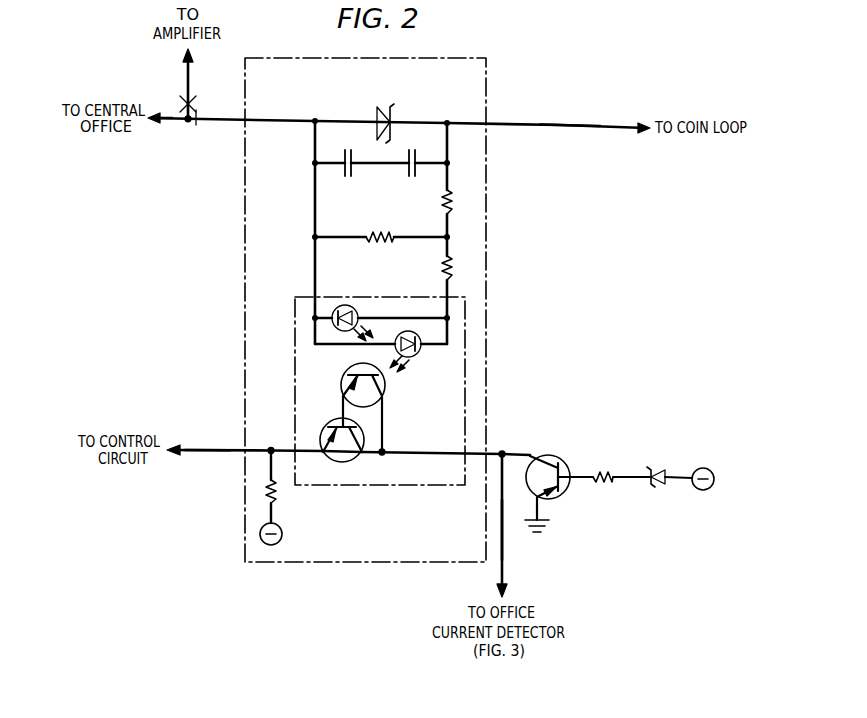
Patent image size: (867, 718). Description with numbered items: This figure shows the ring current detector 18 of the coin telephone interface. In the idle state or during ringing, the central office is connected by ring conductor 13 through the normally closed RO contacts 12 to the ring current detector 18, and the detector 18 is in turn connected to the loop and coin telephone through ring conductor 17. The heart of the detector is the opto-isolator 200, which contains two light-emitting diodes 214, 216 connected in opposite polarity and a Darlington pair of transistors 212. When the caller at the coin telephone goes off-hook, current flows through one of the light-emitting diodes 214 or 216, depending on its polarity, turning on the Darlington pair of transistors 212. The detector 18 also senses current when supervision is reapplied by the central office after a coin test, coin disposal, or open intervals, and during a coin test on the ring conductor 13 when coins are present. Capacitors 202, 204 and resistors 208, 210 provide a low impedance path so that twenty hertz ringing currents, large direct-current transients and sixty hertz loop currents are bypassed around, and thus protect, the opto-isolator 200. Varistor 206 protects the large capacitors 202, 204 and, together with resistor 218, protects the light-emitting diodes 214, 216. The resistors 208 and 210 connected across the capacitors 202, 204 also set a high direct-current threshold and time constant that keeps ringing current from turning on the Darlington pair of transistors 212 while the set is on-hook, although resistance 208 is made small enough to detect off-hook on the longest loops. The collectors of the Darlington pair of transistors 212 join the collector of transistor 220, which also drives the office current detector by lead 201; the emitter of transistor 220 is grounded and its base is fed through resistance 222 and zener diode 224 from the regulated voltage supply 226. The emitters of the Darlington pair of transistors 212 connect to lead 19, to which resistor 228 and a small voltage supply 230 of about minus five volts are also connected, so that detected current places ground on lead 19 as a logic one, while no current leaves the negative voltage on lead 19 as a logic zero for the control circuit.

The RO contacts 12 is at (187, 126).
The ring conductor 13 is at (169, 116).
The RO contacts RO is at (200, 98).
The ring conductor 17 is at (563, 130).
The ring current detector 18 is at (478, 78).
The lead 19 is at (205, 444).
The opto-isolator 200 is at (398, 482).
The lead 201 is at (506, 544).
The capacitor 202 is at (346, 174).
The capacitor 204 is at (413, 154).
The varistor 206 is at (398, 119).
The resistor 208 is at (381, 249).
The resistor 210 is at (434, 202).
The Darlington pair of transistors 212 is at (366, 418).
The light-emitting diode 214 is at (357, 318).
The light-emitting diode 216 is at (415, 353).
The resistor 218 is at (434, 268).
The transistor 220 is at (559, 484).
The resistance 222 is at (620, 466).
The zener diode 224 is at (667, 469).
The voltage supply 226 is at (703, 470).
The resistor 228 is at (286, 486).
The small voltage supply 230 is at (285, 534).